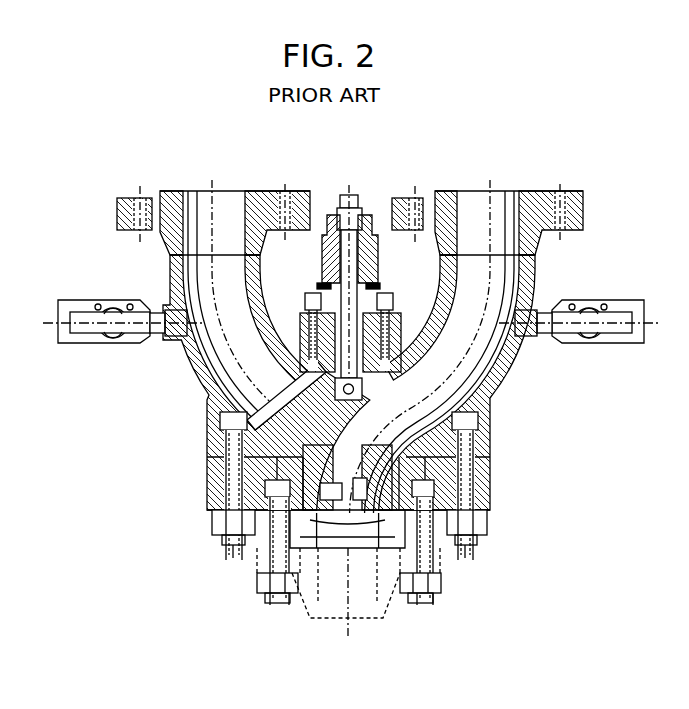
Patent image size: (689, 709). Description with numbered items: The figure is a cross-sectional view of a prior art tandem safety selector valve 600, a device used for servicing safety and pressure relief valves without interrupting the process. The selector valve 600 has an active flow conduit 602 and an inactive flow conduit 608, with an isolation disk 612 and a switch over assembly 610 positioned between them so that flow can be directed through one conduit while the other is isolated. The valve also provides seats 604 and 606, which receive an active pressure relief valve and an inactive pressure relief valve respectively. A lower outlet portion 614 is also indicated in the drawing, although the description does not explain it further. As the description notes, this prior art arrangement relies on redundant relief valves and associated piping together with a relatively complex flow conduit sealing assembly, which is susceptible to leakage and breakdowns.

The tandem safety selector valve 600 is at (497, 494).
The active flow conduit 602 is at (470, 357).
The seat 604 is at (513, 203).
The seat 606 is at (237, 200).
The inactive flow conduit 608 is at (220, 355).
The switch over assembly 610 is at (352, 200).
The isolation disk 612 is at (235, 410).
The outlet 614 is at (336, 608).